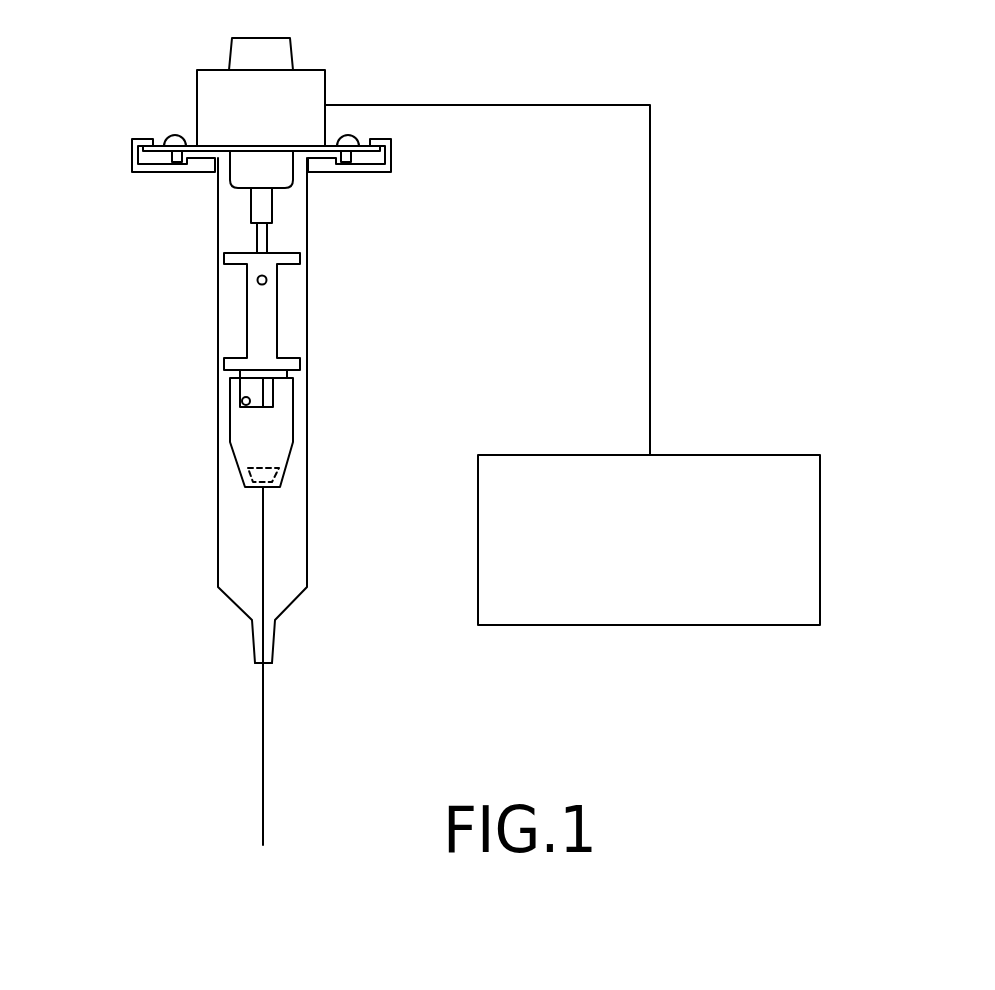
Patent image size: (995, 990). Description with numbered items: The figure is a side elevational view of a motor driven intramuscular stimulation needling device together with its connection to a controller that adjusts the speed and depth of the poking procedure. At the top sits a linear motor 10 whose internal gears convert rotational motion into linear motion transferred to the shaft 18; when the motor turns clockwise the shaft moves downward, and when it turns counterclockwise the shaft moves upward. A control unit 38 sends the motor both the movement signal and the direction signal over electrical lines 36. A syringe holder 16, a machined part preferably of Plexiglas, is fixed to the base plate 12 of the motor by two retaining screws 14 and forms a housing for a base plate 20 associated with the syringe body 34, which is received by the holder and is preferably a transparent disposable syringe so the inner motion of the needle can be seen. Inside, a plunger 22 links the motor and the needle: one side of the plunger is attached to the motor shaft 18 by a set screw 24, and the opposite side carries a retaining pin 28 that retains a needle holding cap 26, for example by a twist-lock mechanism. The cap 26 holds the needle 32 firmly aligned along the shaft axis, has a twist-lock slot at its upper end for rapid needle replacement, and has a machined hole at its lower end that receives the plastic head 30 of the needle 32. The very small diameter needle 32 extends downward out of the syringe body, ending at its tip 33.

The linear motor 10 is at (308, 83).
The base plate 12 is at (245, 147).
The retaining screws 14 is at (173, 138).
The syringe holder 16 is at (373, 162).
The shaft 18 is at (265, 238).
The base plate 20 is at (327, 153).
The plunger 22 is at (268, 333).
The set screw 24 is at (266, 277).
The needle holding cap 26 is at (283, 418).
The retaining pin 28 is at (244, 398).
The head 30 is at (268, 467).
The needle 32 is at (262, 553).
The needle guide tip 33 is at (257, 664).
The syringe body 34 is at (307, 523).
The electrical lines 36 is at (650, 267).
The control unit 38 is at (713, 473).